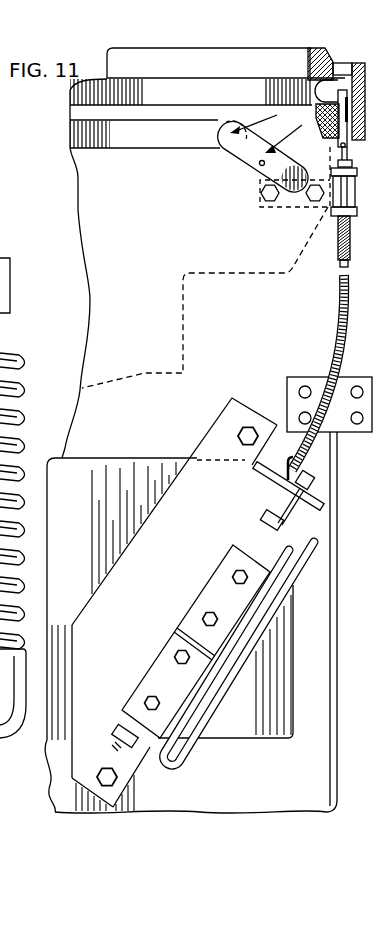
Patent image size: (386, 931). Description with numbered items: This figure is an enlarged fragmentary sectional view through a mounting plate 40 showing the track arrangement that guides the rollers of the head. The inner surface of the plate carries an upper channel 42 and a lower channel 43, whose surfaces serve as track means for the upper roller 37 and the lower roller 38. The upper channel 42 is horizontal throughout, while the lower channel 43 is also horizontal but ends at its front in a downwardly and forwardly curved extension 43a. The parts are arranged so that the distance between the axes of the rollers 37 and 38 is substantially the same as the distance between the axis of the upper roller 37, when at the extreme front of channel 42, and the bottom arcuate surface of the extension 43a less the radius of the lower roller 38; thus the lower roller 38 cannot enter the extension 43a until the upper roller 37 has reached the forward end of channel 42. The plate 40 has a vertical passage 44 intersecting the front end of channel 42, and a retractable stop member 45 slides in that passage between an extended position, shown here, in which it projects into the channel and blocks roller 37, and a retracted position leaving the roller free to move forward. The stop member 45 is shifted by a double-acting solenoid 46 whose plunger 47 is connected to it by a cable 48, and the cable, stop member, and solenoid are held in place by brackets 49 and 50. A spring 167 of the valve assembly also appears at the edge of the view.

The upper roller 37 is at (311, 78).
The lower roller 38 is at (224, 117).
The mounting plate 40 is at (127, 62).
The upper channel 42 is at (185, 78).
The lower channel 43 is at (151, 148).
The channel extension 43a is at (260, 164).
The vertical passage 44 is at (348, 63).
The retractable stop member 45 is at (346, 121).
The double-acting solenoid 46 is at (222, 588).
The plunger 47 is at (272, 538).
The cable 48 is at (352, 150).
The bracket 49 is at (292, 207).
The bracket 50 is at (207, 439).
The spring 167 is at (28, 358).